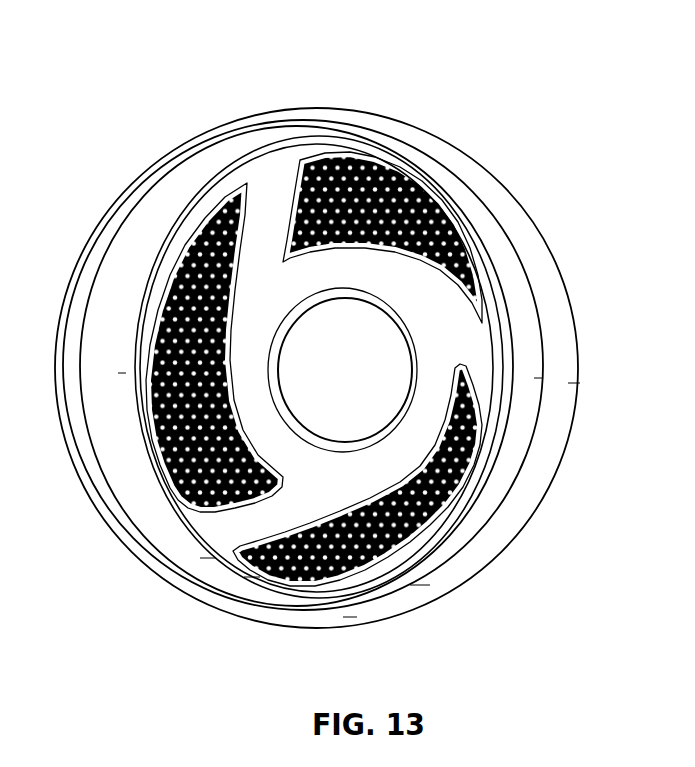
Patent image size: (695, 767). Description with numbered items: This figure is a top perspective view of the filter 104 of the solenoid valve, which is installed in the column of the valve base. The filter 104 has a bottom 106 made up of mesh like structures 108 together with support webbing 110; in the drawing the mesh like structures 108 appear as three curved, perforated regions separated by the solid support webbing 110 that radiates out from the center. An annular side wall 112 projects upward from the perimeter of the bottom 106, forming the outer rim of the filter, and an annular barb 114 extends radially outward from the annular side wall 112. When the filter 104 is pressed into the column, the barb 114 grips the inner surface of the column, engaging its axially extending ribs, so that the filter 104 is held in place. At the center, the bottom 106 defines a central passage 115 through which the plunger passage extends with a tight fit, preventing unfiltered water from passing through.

The filter 104 is at (128, 42).
The bottom 106 is at (225, 546).
The mesh like structures 108 is at (187, 220).
The support webbing 110 is at (473, 357).
The annular side wall 112 is at (557, 434).
The annular barb 114 is at (507, 265).
The central passage 115 is at (323, 370).